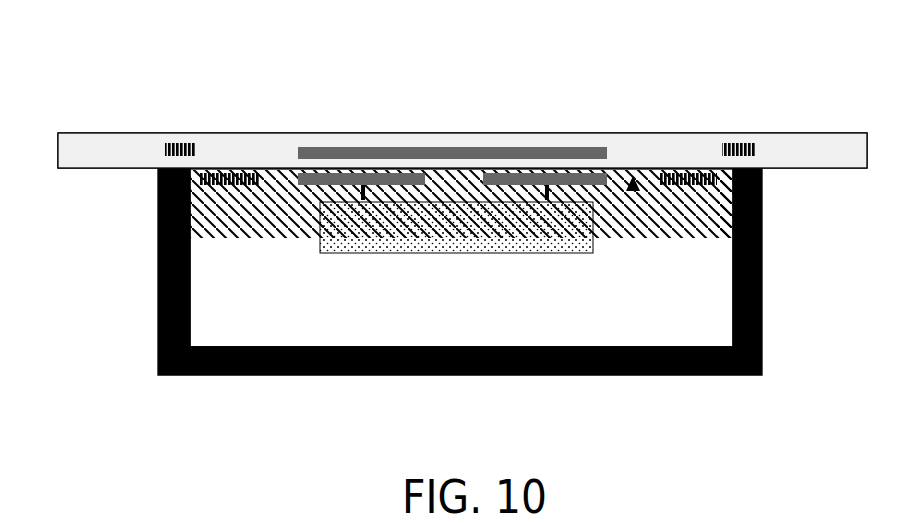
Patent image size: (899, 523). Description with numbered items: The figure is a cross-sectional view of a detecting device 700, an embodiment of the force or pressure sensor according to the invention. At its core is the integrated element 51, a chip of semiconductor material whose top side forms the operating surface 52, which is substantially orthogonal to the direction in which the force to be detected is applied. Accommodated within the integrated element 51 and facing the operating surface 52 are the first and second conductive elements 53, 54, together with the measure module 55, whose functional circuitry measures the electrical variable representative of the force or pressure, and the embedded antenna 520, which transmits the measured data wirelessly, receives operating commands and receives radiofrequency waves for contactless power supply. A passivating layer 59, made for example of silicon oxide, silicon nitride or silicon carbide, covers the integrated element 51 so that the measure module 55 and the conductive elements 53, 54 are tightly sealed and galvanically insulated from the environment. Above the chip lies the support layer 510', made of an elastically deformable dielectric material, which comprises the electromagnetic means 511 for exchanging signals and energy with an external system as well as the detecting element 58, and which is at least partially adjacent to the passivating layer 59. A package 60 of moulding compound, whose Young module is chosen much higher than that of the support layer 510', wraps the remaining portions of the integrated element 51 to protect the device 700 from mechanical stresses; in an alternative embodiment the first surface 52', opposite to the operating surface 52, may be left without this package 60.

The detecting device 700 is at (124, 324).
The support layer 510' is at (462, 89).
The electromagnetic means 511 is at (196, 146).
The detecting element 58 is at (433, 148).
The package 60 is at (745, 357).
The operating surface 52 is at (509, 233).
The embedded antenna 520 is at (723, 180).
The first conductive element 53 is at (303, 182).
The second conductive element 54 is at (630, 176).
The passivating layer 59 is at (682, 172).
The measure module 55 is at (410, 232).
The integrated element 51 is at (684, 302).
The first surface 52' is at (461, 398).